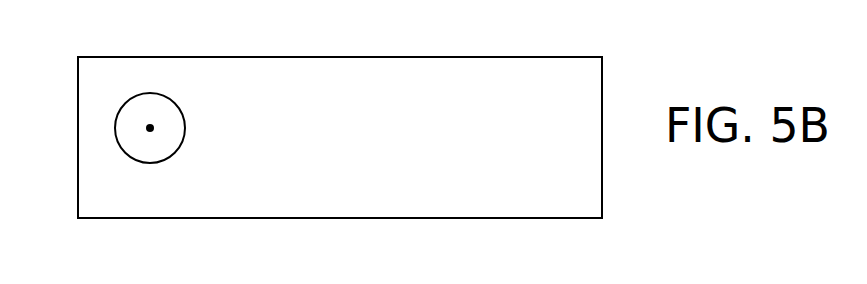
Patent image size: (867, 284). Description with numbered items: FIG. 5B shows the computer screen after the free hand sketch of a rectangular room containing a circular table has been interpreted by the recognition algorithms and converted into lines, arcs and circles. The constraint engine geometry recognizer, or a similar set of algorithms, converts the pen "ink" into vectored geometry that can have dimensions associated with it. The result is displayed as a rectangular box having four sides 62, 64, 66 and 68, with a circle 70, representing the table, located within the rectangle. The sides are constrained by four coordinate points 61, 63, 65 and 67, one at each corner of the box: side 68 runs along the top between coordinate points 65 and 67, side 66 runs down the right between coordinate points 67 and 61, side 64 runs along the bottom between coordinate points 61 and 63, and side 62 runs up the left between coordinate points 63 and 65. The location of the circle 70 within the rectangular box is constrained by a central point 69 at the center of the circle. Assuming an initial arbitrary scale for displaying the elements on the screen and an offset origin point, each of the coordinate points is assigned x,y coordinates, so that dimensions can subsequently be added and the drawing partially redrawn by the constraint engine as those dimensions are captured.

The coordinate point 61 is at (602, 218).
The side 62 is at (78, 171).
The coordinate point 63 is at (78, 218).
The side 64 is at (472, 218).
The coordinate point 65 is at (78, 59).
The side 66 is at (602, 83).
The coordinate point 67 is at (602, 57).
The side 68 is at (440, 57).
The central point 69 is at (149, 140).
The circle 70 is at (185, 117).